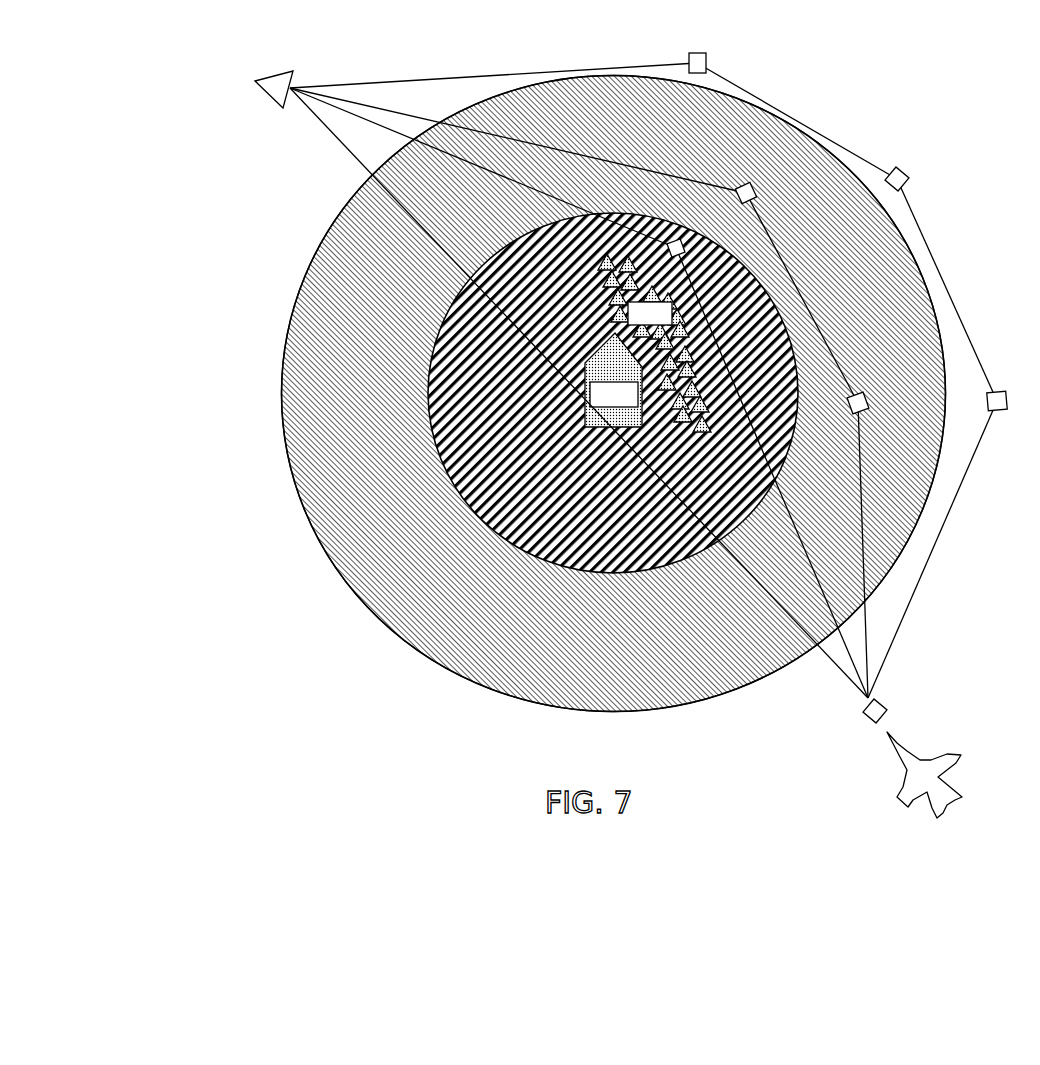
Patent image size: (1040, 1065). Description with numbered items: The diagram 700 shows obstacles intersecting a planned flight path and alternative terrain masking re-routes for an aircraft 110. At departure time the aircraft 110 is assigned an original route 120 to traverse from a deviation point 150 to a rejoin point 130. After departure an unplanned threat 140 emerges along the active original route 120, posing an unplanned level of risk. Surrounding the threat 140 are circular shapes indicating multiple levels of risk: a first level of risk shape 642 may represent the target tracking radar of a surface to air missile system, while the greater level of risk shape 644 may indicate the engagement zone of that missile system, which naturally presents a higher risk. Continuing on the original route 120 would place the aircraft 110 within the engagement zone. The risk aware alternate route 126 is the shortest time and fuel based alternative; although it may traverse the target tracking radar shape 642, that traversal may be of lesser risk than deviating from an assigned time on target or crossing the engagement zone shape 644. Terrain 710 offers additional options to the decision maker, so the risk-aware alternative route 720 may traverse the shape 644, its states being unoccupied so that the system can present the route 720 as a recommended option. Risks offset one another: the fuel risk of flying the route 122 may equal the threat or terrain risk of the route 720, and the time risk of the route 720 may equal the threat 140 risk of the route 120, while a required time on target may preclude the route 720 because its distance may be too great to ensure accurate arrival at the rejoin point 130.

The mission planning scenario display 700 is at (75, 133).
The aircraft 110 is at (950, 755).
The original route 120 is at (817, 648).
The route 122 is at (362, 83).
The risk aware alternate route 126 is at (868, 648).
The rejoin point 130 is at (278, 105).
The threat 140 is at (613, 380).
The deviation point 150 is at (883, 700).
The first level of risk shape 642 is at (282, 442).
The greater level of risk shape 644 is at (430, 363).
The terrain 710 is at (654, 343).
The risk-aware alternative route 720 is at (403, 136).